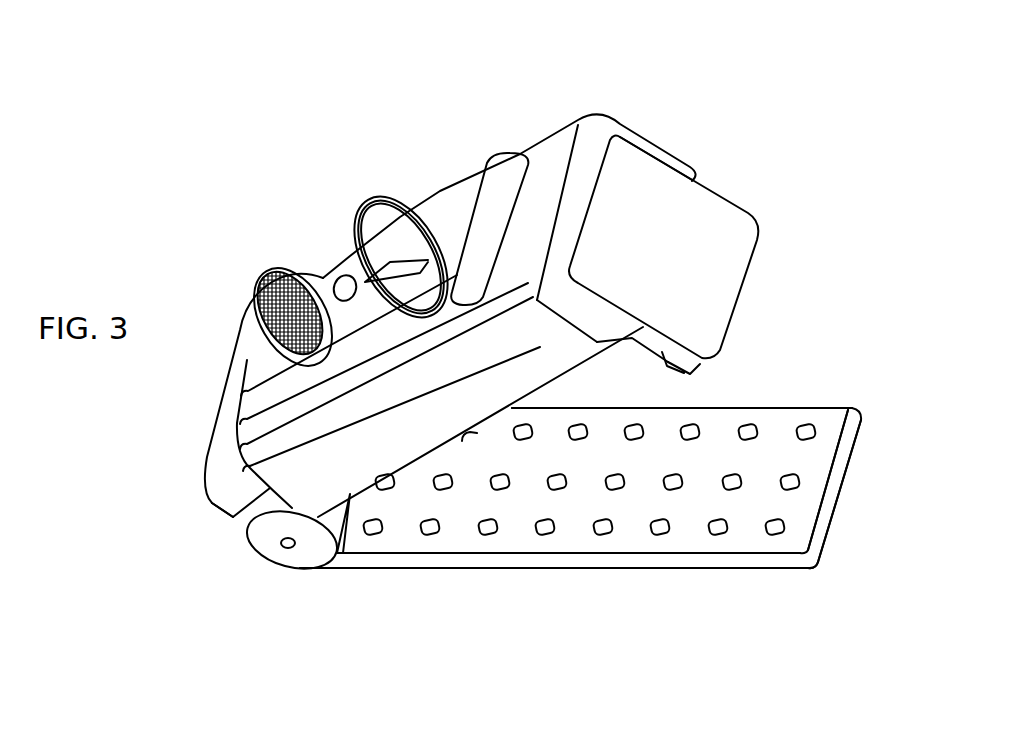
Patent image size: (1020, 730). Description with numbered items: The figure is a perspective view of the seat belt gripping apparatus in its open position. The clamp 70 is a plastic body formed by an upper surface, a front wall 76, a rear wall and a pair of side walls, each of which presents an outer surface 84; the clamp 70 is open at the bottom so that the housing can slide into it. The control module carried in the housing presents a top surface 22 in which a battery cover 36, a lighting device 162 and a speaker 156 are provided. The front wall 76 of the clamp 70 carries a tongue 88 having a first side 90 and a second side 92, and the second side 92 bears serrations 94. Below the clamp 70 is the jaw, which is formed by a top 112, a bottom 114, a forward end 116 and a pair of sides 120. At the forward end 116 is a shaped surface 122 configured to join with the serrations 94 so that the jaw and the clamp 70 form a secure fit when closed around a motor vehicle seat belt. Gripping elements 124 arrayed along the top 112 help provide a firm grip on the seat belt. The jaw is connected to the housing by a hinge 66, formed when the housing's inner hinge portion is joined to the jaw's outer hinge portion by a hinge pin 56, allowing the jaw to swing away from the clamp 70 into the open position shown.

The clamp 70 is at (630, 85).
The top surface 22 is at (462, 192).
The battery cover 36 is at (420, 220).
The lighting device 162 is at (343, 275).
The speaker 156 is at (277, 290).
The front wall 76 is at (657, 153).
The tongue 88 is at (750, 272).
The first side 90 is at (670, 225).
The second side 92 is at (657, 357).
The serrations 94 is at (677, 370).
The outer surface 84 is at (270, 473).
The hinge 66 is at (248, 553).
The hinge pin 56 is at (285, 548).
The top 112 is at (728, 420).
The sides 120 is at (710, 407).
The shaped surface 122 is at (840, 480).
The forward end 116 is at (815, 565).
The bottom 114 is at (652, 572).
The gripping elements 124 is at (807, 427).